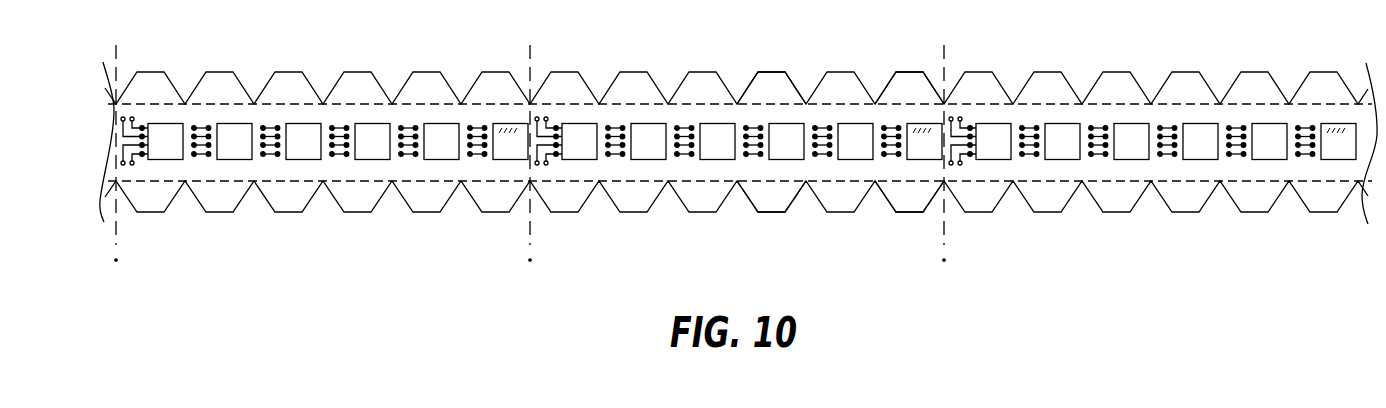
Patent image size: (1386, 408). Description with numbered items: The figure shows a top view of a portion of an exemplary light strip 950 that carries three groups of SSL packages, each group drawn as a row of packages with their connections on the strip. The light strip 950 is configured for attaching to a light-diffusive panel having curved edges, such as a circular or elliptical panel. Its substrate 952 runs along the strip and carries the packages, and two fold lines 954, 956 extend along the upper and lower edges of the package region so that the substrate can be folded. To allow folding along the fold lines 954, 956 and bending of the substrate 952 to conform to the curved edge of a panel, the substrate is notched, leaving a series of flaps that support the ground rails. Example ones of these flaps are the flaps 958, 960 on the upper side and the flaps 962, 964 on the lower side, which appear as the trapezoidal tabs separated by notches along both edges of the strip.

The light strip 950 is at (170, 23).
The substrate 952 is at (272, 115).
The fold line 954 is at (402, 107).
The fold line 956 is at (398, 188).
The flap 958 is at (772, 90).
The flap 960 is at (903, 90).
The flap 962 is at (767, 202).
The flap 964 is at (908, 202).